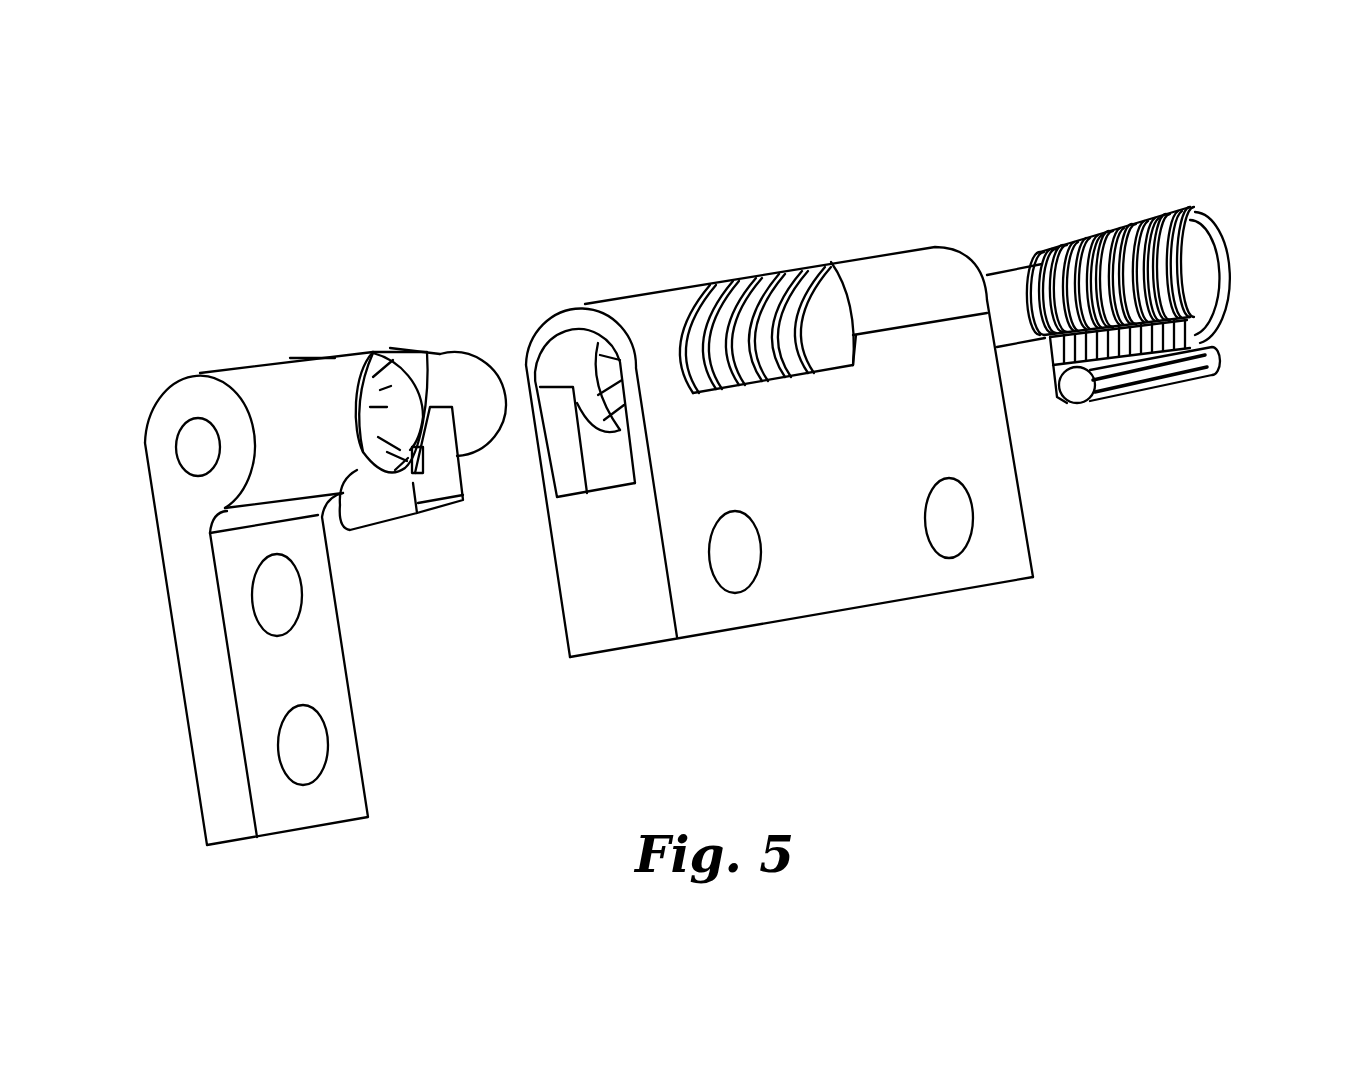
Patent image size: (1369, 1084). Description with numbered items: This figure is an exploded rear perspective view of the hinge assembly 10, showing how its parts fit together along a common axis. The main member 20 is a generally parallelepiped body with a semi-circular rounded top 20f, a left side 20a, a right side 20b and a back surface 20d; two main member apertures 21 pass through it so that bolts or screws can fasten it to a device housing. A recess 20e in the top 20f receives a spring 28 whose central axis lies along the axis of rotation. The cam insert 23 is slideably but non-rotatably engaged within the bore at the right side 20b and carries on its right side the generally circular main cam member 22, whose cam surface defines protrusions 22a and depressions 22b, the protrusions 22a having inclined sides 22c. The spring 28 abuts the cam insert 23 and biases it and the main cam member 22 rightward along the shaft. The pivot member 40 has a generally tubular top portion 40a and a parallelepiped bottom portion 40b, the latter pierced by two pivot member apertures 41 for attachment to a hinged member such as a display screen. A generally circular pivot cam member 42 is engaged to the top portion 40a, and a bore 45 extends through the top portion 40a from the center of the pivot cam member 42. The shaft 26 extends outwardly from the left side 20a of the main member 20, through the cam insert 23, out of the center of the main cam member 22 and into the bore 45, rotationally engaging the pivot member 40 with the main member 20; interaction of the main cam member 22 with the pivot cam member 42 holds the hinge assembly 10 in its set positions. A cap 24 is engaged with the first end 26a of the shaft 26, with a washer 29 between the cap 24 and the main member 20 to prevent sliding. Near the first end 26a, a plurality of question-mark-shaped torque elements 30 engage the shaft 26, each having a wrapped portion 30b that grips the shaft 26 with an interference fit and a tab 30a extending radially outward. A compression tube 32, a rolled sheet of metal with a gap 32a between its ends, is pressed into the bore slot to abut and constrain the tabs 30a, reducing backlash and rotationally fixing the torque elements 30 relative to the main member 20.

The hinge assembly 10 is at (534, 222).
The main member 20 is at (843, 485).
The left side 20a is at (1036, 527).
The right side 20b is at (600, 622).
The back surface 20d is at (823, 597).
The recess 20e is at (848, 352).
The top 20f is at (884, 267).
The main member apertures 21 is at (730, 567).
The main cam member 22 is at (424, 419).
The protrusion 22a is at (437, 352).
The depression 22b is at (352, 348).
The inclined sides 22c is at (373, 350).
The cam insert 23 is at (440, 493).
The cap 24 is at (1192, 292).
The shaft 26 is at (1169, 252).
The first end 26a is at (1223, 303).
The spring 28 is at (728, 290).
The washer 29 is at (1193, 222).
The torque elements 30 is at (1166, 231).
The tab 30a is at (1050, 375).
The wrapped portion 30b is at (1117, 233).
The compression tube 32 is at (1189, 394).
The gap 32a is at (1212, 363).
The pivot member 40 is at (241, 551).
The top portion 40a is at (216, 389).
The bottom portion 40b is at (259, 661).
The pivot member apertures 41 is at (273, 603).
The pivot cam member 42 is at (312, 360).
The bore 45 is at (193, 443).